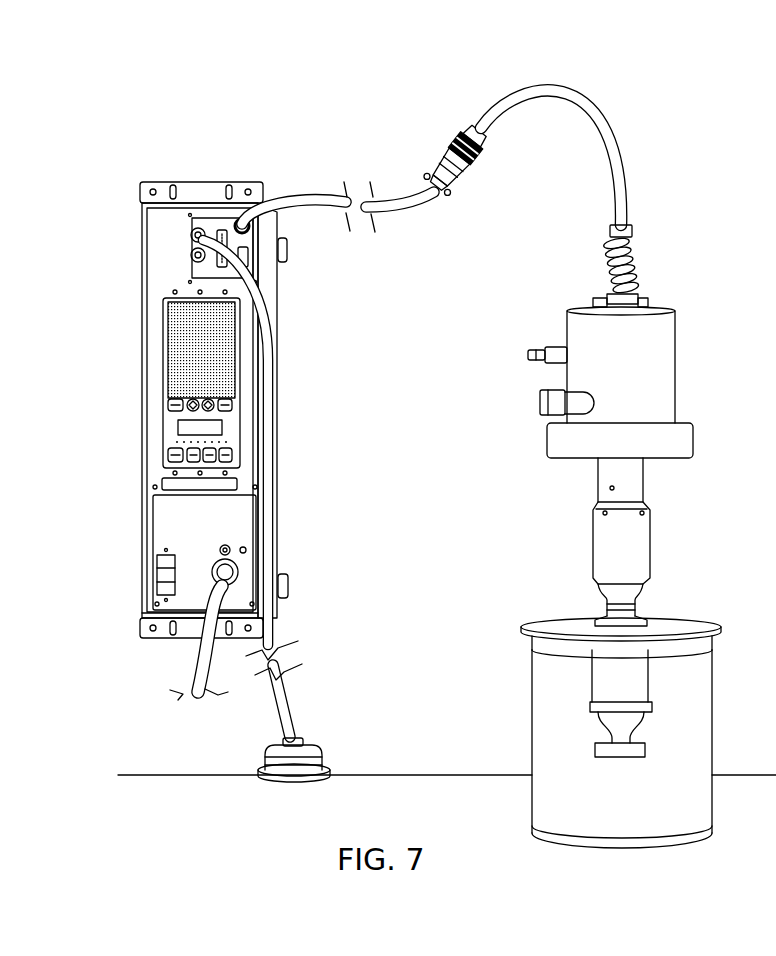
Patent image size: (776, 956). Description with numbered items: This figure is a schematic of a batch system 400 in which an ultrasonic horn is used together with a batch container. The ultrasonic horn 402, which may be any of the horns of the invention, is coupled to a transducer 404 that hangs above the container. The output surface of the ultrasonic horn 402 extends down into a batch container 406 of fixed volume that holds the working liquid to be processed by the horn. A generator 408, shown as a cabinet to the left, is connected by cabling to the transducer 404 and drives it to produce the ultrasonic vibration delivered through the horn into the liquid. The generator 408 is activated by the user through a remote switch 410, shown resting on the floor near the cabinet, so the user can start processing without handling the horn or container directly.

The batch system 400 is at (287, 362).
The ultrasonic horn 402 is at (597, 540).
The transducer 404 is at (597, 352).
The batch container 406 is at (562, 685).
The generator 408 is at (267, 408).
The remote switch 410 is at (312, 762).